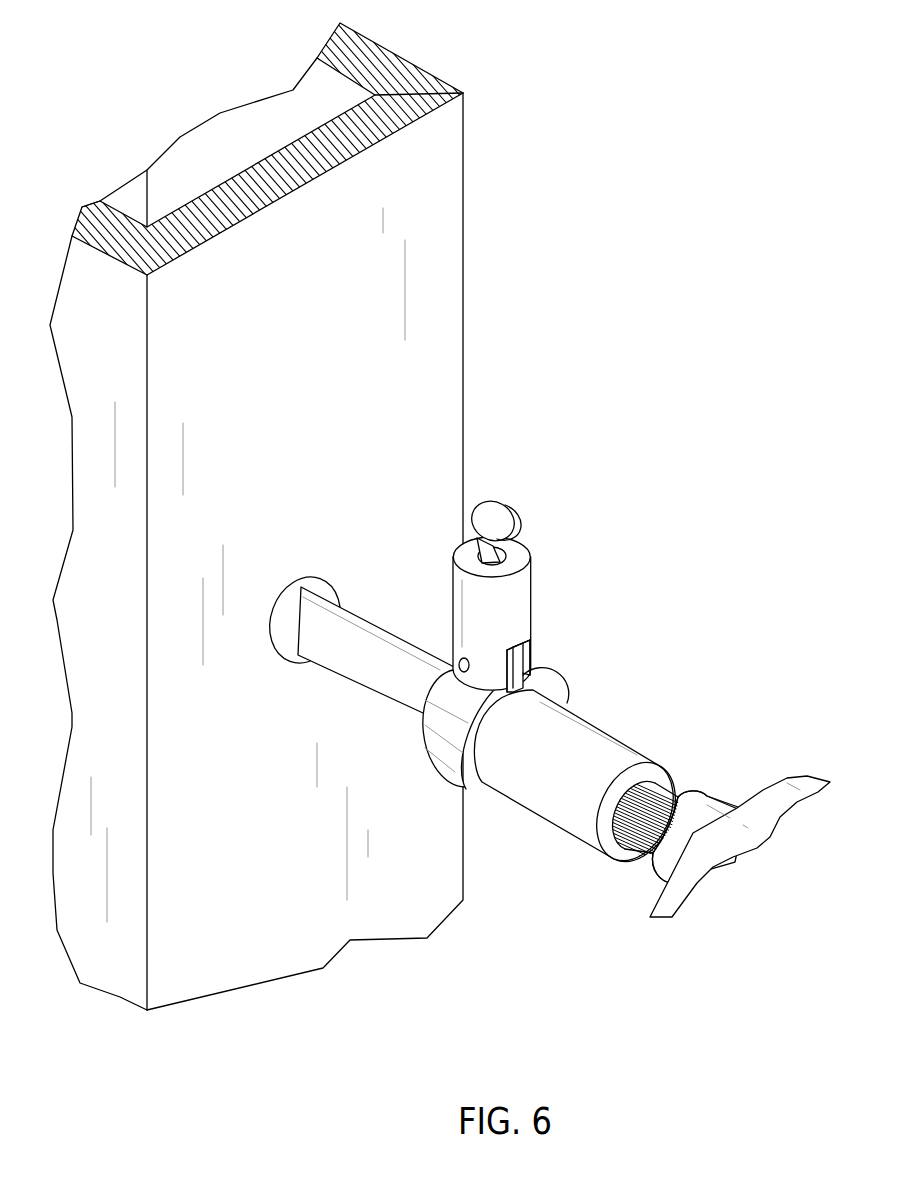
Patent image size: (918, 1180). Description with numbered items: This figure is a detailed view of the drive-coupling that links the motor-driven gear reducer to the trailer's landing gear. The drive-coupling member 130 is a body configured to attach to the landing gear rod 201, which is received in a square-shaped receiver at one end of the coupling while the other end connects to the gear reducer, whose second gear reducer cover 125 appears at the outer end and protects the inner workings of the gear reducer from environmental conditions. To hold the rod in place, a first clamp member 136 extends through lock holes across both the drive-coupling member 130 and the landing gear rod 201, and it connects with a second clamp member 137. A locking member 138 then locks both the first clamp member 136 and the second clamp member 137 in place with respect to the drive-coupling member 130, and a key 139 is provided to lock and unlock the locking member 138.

The second gear reducer cover 125 is at (655, 799).
The drive-coupling member 130 is at (532, 797).
The first clamp member 136 is at (548, 676).
The second clamp member 137 is at (440, 753).
The locking member 138 is at (531, 585).
The key 139 is at (490, 501).
The landing gear rod 201 is at (337, 653).